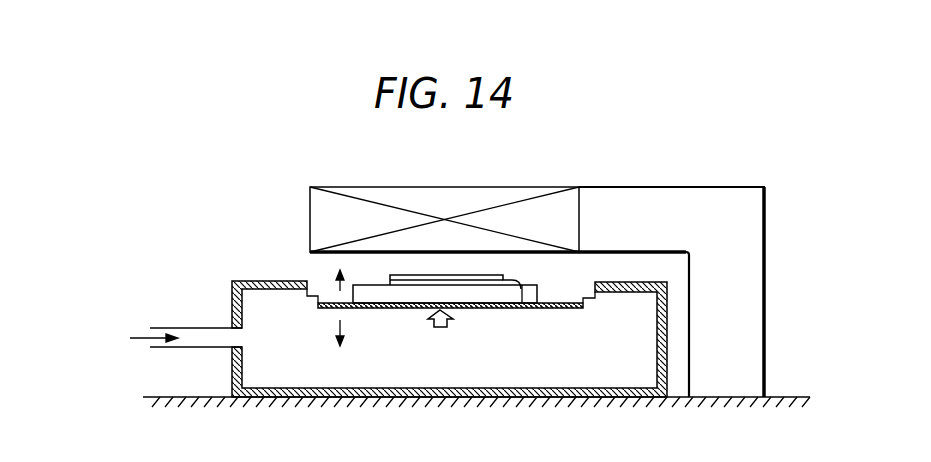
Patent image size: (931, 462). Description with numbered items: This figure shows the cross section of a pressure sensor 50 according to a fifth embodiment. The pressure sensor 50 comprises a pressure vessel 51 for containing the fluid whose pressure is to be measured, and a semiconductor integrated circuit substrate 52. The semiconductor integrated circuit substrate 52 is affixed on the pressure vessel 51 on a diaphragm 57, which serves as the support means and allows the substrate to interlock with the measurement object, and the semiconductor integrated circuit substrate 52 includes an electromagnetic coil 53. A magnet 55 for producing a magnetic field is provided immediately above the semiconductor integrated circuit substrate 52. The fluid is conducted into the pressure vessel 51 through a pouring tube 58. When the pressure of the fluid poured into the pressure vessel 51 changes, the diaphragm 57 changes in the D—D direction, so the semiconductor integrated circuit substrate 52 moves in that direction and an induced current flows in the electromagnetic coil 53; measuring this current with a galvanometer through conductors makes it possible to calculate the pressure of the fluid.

The pressure sensor 50 is at (222, 228).
The pressure vessel 51 is at (233, 284).
The semiconductor integrated circuit substrate 52 is at (467, 292).
The electromagnetic coil 53 is at (520, 303).
The magnet 55 is at (457, 187).
The diaphragm 57 is at (553, 308).
The pouring tube 58 is at (170, 328).